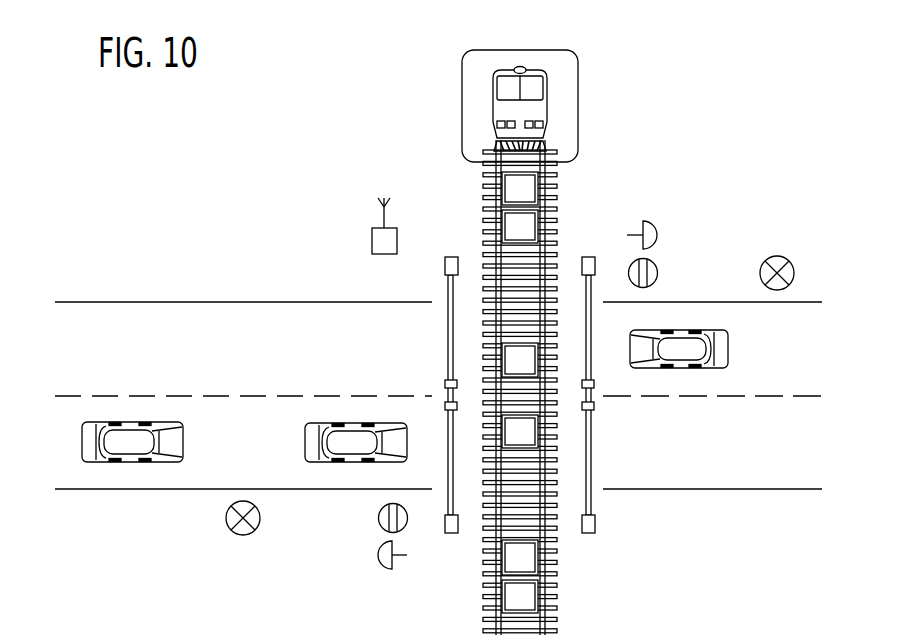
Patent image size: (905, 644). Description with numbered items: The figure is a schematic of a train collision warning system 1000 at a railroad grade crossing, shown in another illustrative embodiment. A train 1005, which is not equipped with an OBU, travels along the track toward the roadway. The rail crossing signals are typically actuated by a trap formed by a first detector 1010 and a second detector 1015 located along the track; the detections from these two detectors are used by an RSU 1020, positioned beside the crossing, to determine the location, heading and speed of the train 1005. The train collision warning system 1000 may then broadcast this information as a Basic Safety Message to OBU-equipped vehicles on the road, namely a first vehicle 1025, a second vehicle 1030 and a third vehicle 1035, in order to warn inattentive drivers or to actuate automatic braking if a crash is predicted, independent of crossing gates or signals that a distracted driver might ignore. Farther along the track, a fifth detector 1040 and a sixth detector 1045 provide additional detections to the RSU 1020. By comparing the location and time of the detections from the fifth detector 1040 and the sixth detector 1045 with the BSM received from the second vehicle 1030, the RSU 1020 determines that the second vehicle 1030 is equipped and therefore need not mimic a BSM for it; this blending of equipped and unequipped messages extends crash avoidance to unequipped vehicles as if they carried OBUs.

The train collision warning system 1000 is at (650, 88).
The train 1005 is at (462, 107).
The detector D1 1010 is at (503, 173).
The detector D2 1015 is at (505, 213).
The RSU 1020 is at (370, 241).
The vehicle V1 1025 is at (118, 422).
The vehicle V2 1030 is at (337, 423).
The vehicle V3 1035 is at (692, 368).
The detector D5 1040 is at (533, 568).
The detector D6 1045 is at (533, 606).